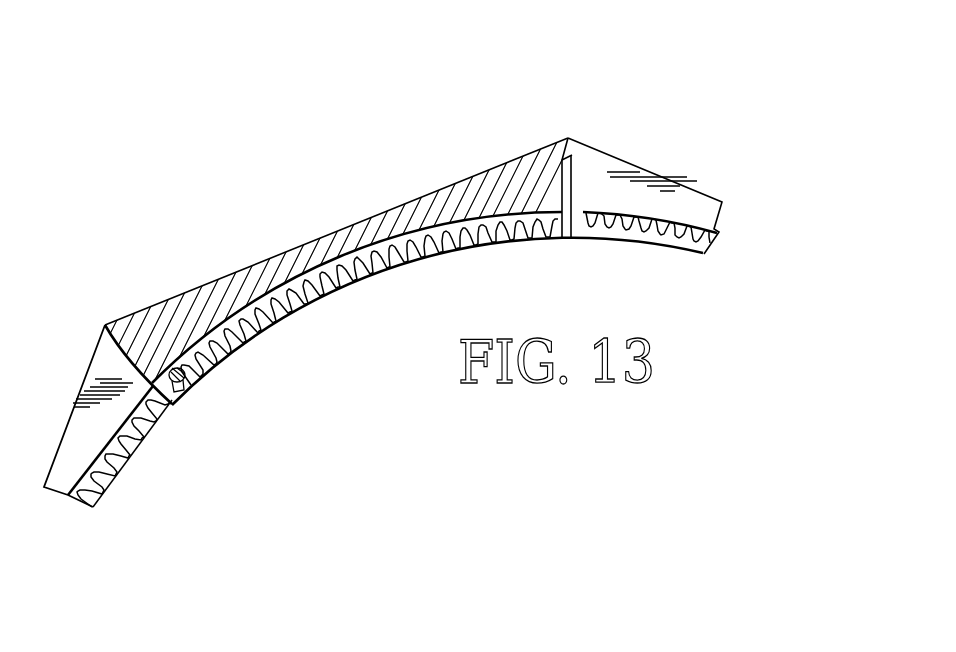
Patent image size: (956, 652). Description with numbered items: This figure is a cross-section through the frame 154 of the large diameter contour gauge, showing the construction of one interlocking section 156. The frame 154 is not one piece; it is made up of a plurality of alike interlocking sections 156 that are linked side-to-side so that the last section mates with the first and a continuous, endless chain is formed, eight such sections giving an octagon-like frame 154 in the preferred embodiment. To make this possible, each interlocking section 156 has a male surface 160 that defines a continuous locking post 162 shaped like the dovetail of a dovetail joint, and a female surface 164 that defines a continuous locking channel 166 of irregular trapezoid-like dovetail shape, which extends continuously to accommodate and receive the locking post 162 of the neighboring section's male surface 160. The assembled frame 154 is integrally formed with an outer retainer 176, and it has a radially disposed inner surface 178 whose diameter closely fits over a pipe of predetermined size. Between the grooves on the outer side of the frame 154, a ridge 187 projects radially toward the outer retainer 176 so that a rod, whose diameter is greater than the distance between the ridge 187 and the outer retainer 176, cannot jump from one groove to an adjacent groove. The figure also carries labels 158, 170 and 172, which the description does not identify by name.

The frame 154 is at (210, 242).
The interlocking section 156 is at (584, 117).
The outer shell section 158 is at (92, 514).
The male surface 160 is at (116, 350).
The locking post 162 is at (100, 366).
The female surface 164 is at (582, 150).
The locking channel 166 is at (565, 184).
The fastener pin 170 is at (279, 288).
The end section 172 is at (720, 243).
The outer retainer 176 is at (423, 195).
The inner surface 178 is at (276, 325).
The ridge 187 is at (654, 227).